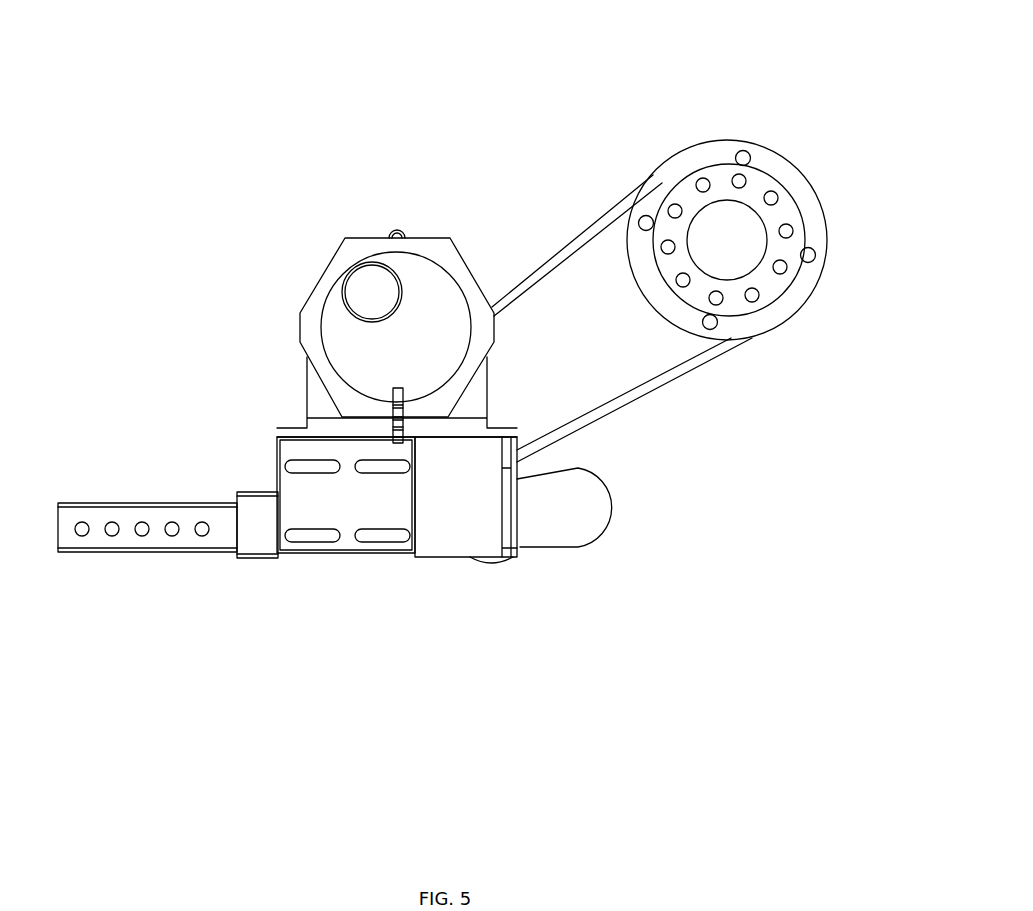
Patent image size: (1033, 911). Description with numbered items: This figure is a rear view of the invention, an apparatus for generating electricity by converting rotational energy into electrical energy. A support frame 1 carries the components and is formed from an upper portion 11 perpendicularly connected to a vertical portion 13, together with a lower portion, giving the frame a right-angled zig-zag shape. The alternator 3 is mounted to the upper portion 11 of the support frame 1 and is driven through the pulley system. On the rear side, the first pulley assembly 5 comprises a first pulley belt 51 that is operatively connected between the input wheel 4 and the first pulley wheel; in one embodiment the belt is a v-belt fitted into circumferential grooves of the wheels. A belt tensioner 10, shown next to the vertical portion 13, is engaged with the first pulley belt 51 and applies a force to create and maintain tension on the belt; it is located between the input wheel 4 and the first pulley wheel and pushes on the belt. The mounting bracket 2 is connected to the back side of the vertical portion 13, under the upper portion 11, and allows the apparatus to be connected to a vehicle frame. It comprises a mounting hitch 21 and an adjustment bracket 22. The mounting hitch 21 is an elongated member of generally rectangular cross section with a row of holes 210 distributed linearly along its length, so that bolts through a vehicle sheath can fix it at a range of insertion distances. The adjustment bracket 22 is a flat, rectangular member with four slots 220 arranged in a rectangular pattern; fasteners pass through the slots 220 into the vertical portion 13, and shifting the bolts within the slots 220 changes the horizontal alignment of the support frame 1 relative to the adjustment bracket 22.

The support frame 1 is at (470, 579).
The belt tensioner 10 is at (578, 515).
The upper portion 11 is at (297, 430).
The vertical portion 13 is at (448, 523).
The mounting bracket 2 is at (205, 471).
The mounting hitch 21 is at (128, 503).
The positioning holes 210 is at (197, 605).
The adjustment bracket 22 is at (297, 497).
The plurality of slots 220 is at (297, 467).
The alternator 3 is at (378, 238).
The input wheel 4 is at (698, 157).
The first pulley assembly 5 is at (548, 203).
The first pulley belt 51 is at (573, 245).